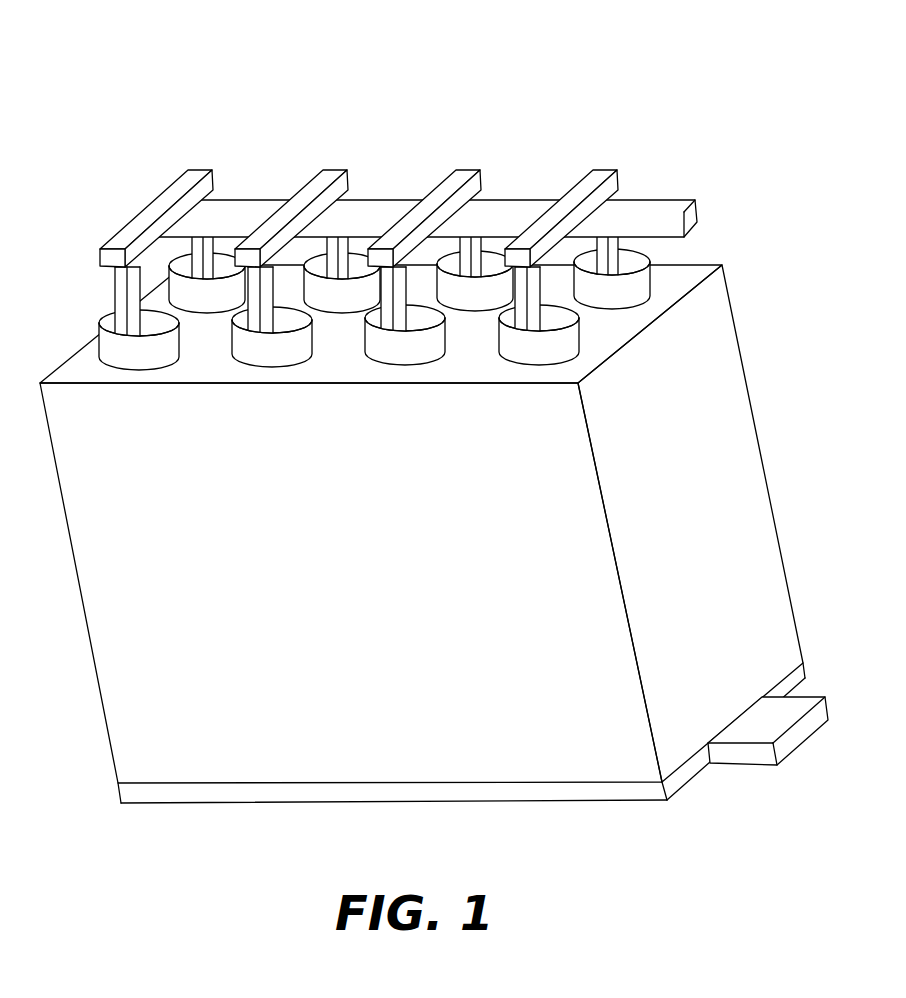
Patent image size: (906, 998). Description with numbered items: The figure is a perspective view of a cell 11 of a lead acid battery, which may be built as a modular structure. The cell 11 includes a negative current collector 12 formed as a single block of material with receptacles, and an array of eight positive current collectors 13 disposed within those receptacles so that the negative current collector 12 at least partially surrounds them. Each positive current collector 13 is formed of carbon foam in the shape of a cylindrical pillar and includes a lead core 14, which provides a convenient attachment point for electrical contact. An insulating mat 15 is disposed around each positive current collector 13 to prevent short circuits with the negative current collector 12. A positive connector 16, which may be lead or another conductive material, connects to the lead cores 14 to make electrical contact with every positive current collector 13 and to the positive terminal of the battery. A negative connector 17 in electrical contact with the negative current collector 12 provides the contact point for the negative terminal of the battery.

The cell 11 is at (521, 100).
The negative current collector 12 is at (720, 380).
The positive current collector 13 is at (108, 333).
The lead core 14 is at (112, 292).
The insulating mat 15 is at (643, 282).
The positive connector 16 is at (690, 212).
The negative connector 17 is at (750, 752).